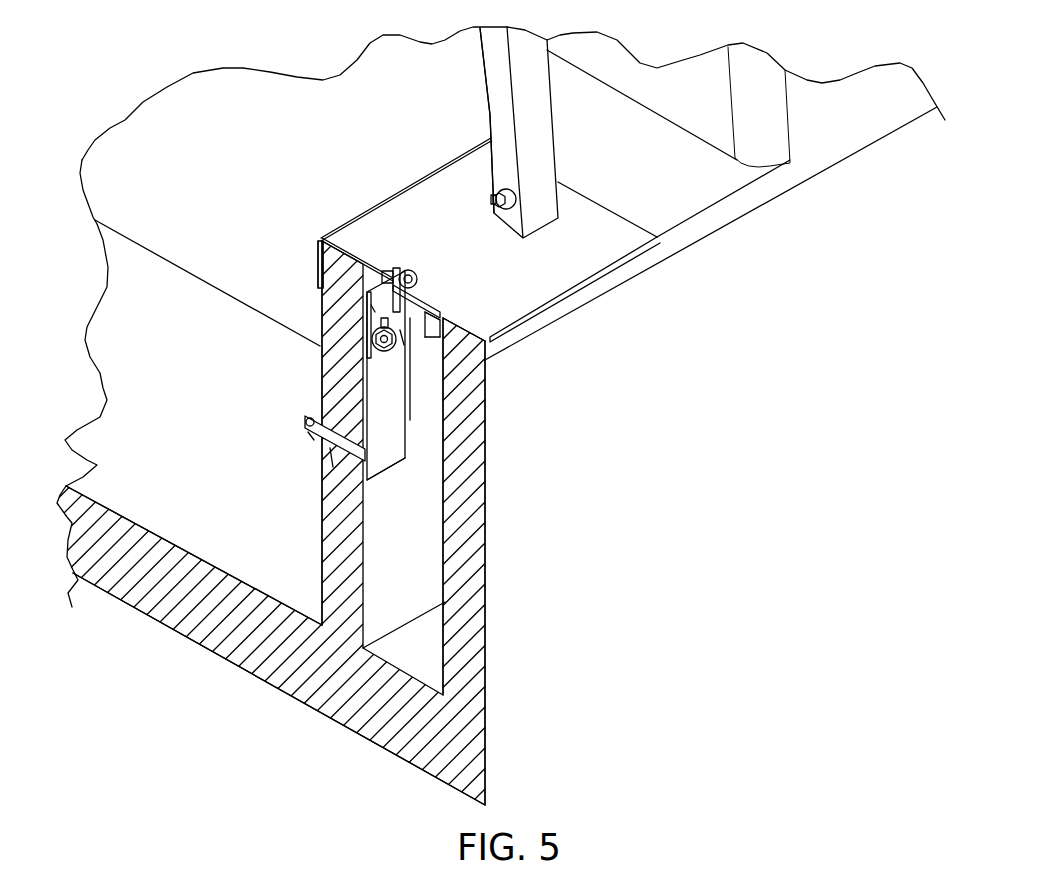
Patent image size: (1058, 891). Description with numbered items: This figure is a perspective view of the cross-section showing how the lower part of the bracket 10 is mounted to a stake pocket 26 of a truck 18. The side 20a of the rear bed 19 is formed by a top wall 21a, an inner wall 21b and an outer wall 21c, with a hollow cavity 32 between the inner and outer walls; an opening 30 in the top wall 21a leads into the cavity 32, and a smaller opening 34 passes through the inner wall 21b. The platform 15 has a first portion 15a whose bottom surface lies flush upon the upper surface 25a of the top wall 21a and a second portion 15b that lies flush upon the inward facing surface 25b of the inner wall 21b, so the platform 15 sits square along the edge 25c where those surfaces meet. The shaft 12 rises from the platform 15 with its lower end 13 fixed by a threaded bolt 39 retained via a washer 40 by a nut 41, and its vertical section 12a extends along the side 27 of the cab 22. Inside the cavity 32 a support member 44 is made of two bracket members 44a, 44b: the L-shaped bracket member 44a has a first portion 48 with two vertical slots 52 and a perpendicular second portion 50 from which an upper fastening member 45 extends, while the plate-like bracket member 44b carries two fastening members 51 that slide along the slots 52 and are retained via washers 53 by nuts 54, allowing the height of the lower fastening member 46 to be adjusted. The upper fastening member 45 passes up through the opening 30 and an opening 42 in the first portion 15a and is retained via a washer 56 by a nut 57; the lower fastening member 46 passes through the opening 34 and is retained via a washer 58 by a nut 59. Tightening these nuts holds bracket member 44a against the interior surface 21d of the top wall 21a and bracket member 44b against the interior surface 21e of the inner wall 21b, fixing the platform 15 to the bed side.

The bracket 10 is at (545, 88).
The shaft 12 is at (559, 138).
The section of shaft 12a is at (492, 170).
The lower end of shaft 13 is at (560, 183).
The platform 15 is at (612, 208).
The first portion of platform 15a is at (418, 190).
The second portion of platform 15b is at (318, 258).
The truck 18 is at (485, 690).
The rear bed 19 is at (156, 487).
The side of rear bed 20a is at (670, 217).
The top wall 21a is at (490, 332).
The inner wall 21b is at (322, 520).
The outer wall 21c is at (485, 517).
The interior surface of top wall 21d is at (443, 357).
The interior surface of inner wall 21e is at (353, 577).
The cab 22 is at (838, 108).
The upper surface of top wall 25a is at (350, 273).
The inward facing surface of inner wall 25b is at (318, 278).
The edge 25c is at (320, 241).
The stake pocket 26 is at (428, 332).
The side of cab 27 is at (762, 118).
The opening 30 is at (438, 330).
The hollow cavity 32 is at (433, 568).
The opening 34 is at (333, 467).
The threaded bolt 39 is at (495, 217).
The washer 40 is at (500, 184).
The nut 41 is at (493, 193).
The opening 42 is at (388, 271).
The support member 44 is at (392, 482).
The bracket member 44a is at (371, 292).
The bracket member 44b is at (408, 432).
The upper fastening member 45 is at (412, 297).
The lower fastening member 46 is at (305, 420).
The first portion of bracket member 48 is at (368, 308).
The second portion of bracket member 50 is at (430, 345).
The fastening member 51 is at (409, 377).
The vertical slot 52 is at (368, 318).
The washer 53 is at (403, 337).
The nut 54 is at (374, 348).
The washer 56 is at (416, 283).
The nut 57 is at (400, 272).
The washer 58 is at (310, 418).
The nut 59 is at (312, 437).